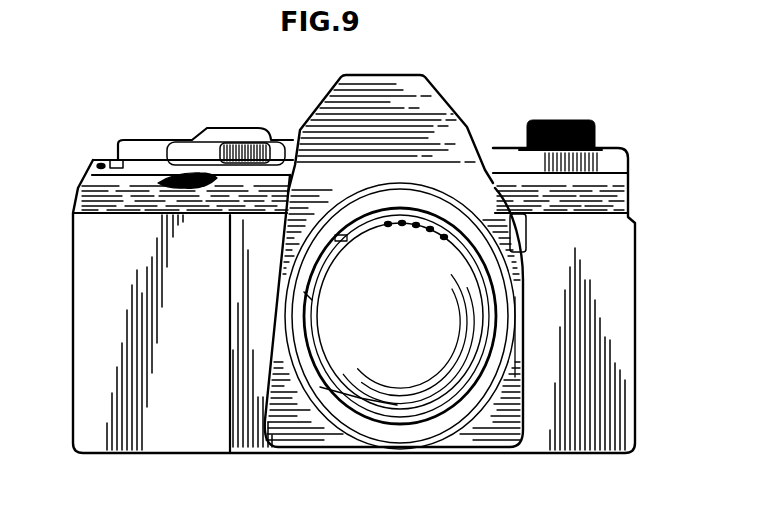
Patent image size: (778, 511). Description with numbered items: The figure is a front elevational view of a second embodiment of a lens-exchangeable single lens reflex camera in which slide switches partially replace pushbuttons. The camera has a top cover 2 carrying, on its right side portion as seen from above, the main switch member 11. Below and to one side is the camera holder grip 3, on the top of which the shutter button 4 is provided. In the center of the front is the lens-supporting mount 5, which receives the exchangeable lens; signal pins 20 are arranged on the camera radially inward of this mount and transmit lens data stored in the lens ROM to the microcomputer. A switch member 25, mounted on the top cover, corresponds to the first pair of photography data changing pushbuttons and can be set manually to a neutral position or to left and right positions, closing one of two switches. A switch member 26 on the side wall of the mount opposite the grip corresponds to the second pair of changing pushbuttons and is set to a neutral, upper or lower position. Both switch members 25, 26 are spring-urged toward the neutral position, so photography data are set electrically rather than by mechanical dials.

The top cover 2 is at (434, 80).
The camera holder grip 3 is at (163, 435).
The shutter button 4 is at (185, 174).
The lens-supporting mount 5 is at (333, 420).
The main switch member 11 is at (102, 158).
The signal pins 20 is at (444, 237).
The switch member 25 is at (245, 143).
The switch member 26 is at (527, 232).